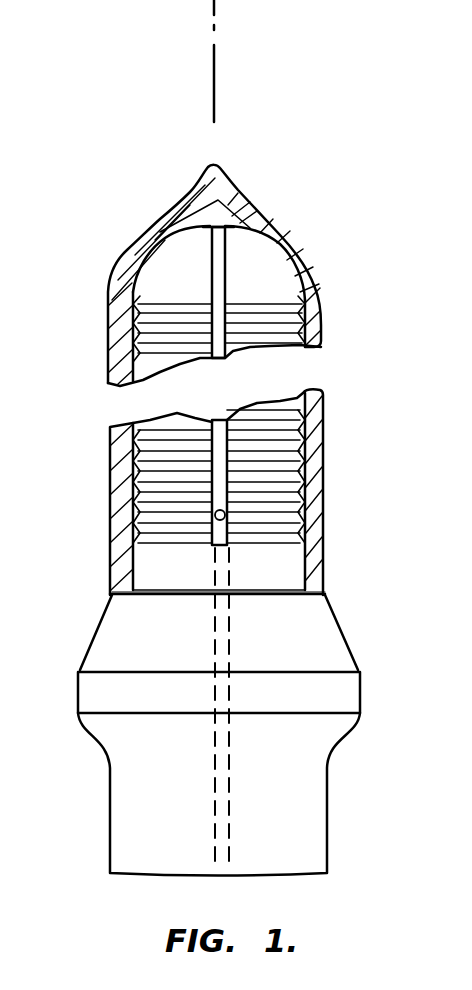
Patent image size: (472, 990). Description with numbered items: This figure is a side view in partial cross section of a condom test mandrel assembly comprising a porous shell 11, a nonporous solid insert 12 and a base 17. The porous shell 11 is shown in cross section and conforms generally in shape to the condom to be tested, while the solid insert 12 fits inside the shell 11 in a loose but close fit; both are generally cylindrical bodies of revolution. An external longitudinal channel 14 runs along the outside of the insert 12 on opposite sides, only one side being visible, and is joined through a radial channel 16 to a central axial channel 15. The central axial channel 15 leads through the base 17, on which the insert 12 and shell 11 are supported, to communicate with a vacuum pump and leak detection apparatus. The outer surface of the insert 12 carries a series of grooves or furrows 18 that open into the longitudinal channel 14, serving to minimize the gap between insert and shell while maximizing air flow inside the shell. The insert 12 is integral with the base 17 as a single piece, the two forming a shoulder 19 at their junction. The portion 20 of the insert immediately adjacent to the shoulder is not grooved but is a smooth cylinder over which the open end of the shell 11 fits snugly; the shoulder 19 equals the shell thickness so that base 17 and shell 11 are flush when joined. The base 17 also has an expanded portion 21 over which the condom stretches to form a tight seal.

The porous shell 11 is at (250, 205).
The nonporous solid insert 12 is at (172, 262).
The external longitudinal channel 14 is at (215, 302).
The central axial channel 15 is at (222, 625).
The radial channel 16 is at (223, 548).
The base 17 is at (330, 818).
The grooves or furrows 18 is at (137, 485).
The shoulder 19 is at (125, 590).
The smooth cylinder portion 20 is at (145, 572).
The expanded portion 21 is at (345, 688).